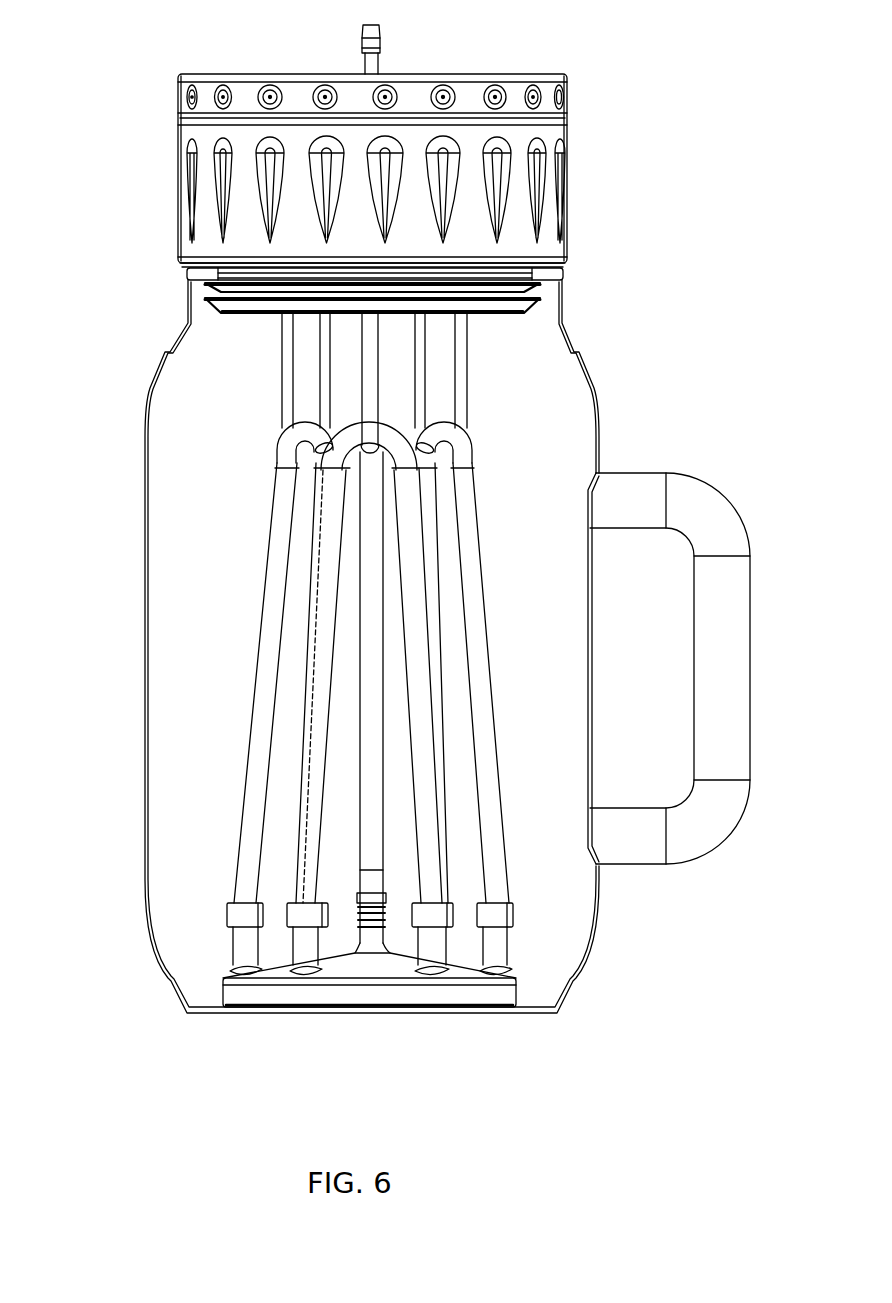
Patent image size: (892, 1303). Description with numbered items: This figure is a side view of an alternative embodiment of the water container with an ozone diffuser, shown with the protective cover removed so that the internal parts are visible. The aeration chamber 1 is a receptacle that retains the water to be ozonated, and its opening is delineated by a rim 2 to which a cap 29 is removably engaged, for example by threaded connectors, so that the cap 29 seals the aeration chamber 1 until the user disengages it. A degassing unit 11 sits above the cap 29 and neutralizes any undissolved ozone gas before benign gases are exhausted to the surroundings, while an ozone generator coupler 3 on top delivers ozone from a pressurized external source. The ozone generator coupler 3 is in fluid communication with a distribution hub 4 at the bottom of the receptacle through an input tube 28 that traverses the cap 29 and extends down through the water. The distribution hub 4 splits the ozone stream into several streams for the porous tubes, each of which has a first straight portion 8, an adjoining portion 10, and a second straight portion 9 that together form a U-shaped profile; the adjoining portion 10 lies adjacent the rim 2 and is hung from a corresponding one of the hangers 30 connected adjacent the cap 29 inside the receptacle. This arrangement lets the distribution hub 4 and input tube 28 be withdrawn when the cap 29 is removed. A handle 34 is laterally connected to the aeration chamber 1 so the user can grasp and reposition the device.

The aeration chamber 1 is at (145, 278).
The rim 2 is at (550, 275).
The ozone generator coupler 3 is at (373, 45).
The distribution hub 4 is at (390, 953).
The first straight portion 8 is at (268, 630).
The second straight portion 9 is at (315, 513).
The adjoining portion 10 is at (282, 457).
The degassing unit 11 is at (145, 75).
The input tube 28 is at (368, 827).
The cap 29 is at (557, 265).
The hangers 30 is at (283, 407).
The handle 34 is at (727, 524).